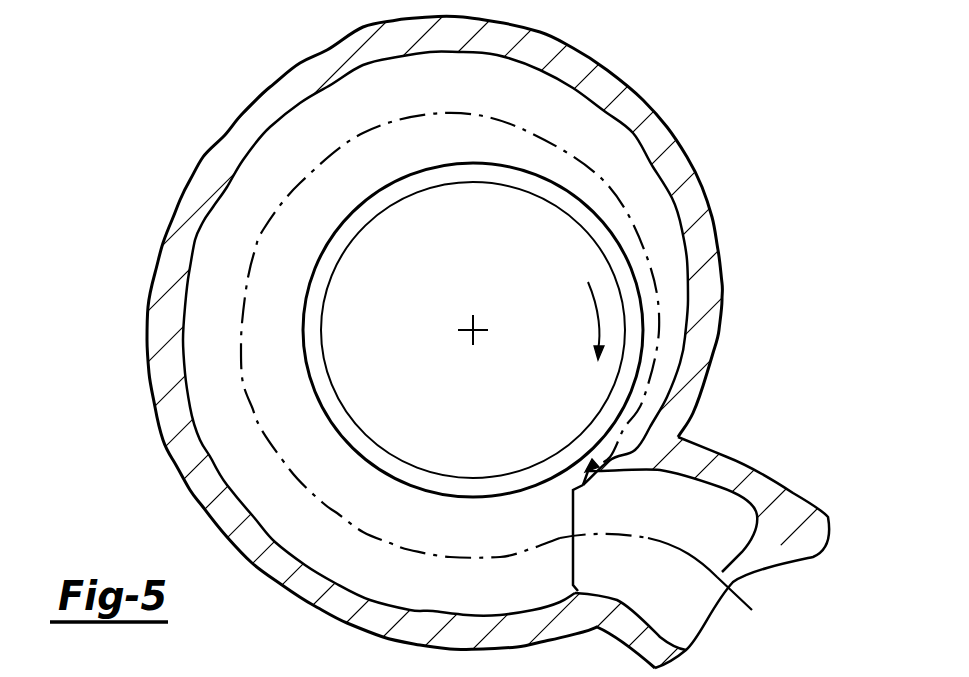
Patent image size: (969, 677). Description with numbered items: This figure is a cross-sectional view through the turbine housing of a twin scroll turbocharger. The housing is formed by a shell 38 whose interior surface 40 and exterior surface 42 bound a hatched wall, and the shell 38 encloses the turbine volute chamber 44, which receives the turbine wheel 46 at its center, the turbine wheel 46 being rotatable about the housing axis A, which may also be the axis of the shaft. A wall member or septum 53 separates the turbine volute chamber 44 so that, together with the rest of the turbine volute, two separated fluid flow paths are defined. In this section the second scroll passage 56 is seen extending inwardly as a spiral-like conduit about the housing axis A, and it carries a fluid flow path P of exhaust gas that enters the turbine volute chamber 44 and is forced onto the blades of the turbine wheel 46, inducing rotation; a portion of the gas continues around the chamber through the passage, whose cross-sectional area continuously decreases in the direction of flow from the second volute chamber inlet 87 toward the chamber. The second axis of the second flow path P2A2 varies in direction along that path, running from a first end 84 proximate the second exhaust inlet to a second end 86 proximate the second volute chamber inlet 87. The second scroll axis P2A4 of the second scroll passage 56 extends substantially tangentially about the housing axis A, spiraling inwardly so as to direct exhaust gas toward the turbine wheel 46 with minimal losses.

The shell 38 is at (176, 187).
The interior surface 40 is at (238, 160).
The exterior surface 42 is at (150, 290).
The turbine volute chamber 44 is at (485, 246).
The turbine wheel 46 is at (625, 310).
The septum 53 is at (314, 368).
The second scroll passage 56 is at (471, 152).
The first end 84 is at (756, 601).
The second end 86 is at (590, 533).
The second volute chamber inlet 87 is at (572, 533).
The housing axis A is at (470, 331).
The fluid flow path P is at (590, 309).
The second axis of the second flow path P2A2 is at (722, 572).
The second scroll axis P2A4 is at (290, 468).